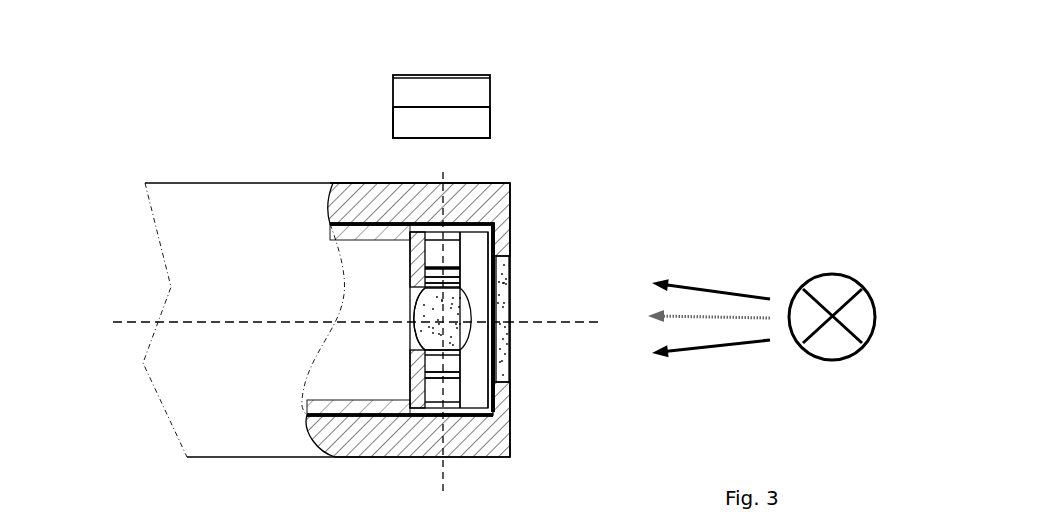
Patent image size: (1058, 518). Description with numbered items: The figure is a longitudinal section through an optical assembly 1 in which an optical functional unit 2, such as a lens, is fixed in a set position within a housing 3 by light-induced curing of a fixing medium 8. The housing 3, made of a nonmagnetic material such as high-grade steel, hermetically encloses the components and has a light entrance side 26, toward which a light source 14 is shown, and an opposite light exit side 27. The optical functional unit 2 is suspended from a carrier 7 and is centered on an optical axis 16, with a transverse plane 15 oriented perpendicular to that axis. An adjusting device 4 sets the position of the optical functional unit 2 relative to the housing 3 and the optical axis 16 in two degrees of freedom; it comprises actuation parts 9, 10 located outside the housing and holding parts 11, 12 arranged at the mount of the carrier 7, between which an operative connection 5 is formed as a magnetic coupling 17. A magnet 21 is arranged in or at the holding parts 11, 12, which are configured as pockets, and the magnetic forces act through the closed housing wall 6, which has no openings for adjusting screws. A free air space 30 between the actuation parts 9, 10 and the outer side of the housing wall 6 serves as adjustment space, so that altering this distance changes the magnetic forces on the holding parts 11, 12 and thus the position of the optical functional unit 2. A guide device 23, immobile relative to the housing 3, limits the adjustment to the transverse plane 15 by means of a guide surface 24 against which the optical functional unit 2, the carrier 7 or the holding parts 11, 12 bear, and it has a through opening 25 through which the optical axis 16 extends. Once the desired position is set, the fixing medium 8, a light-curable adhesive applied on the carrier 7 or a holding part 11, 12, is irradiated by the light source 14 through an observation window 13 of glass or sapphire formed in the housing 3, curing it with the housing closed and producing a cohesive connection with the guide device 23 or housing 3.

The optical assembly 1 is at (713, 220).
The optical functional unit 2 is at (433, 306).
The housing 3 is at (508, 185).
The adjusting device 4 is at (530, 147).
The operative connection 5 is at (378, 160).
The housing wall 6 is at (450, 188).
The carrier 7 is at (470, 348).
The fixing medium 8 is at (472, 285).
The first actuation part 9 is at (451, 75).
The second actuation part 10 is at (441, 122).
The first holding part 11 is at (512, 255).
The second holding part 12 is at (411, 318).
The observation window 13 is at (508, 367).
The light source 14 is at (830, 358).
The transverse plane 15 is at (444, 342).
The optical axis 16 is at (343, 325).
The magnetic coupling 17 is at (333, 150).
The magnet 21 is at (433, 268).
The guide device 23 is at (415, 255).
The guide surface 24 is at (437, 387).
The through opening 25 is at (432, 295).
The light entrance side 26 is at (562, 291).
The light exit side 27 is at (50, 308).
The air space 30 is at (463, 168).